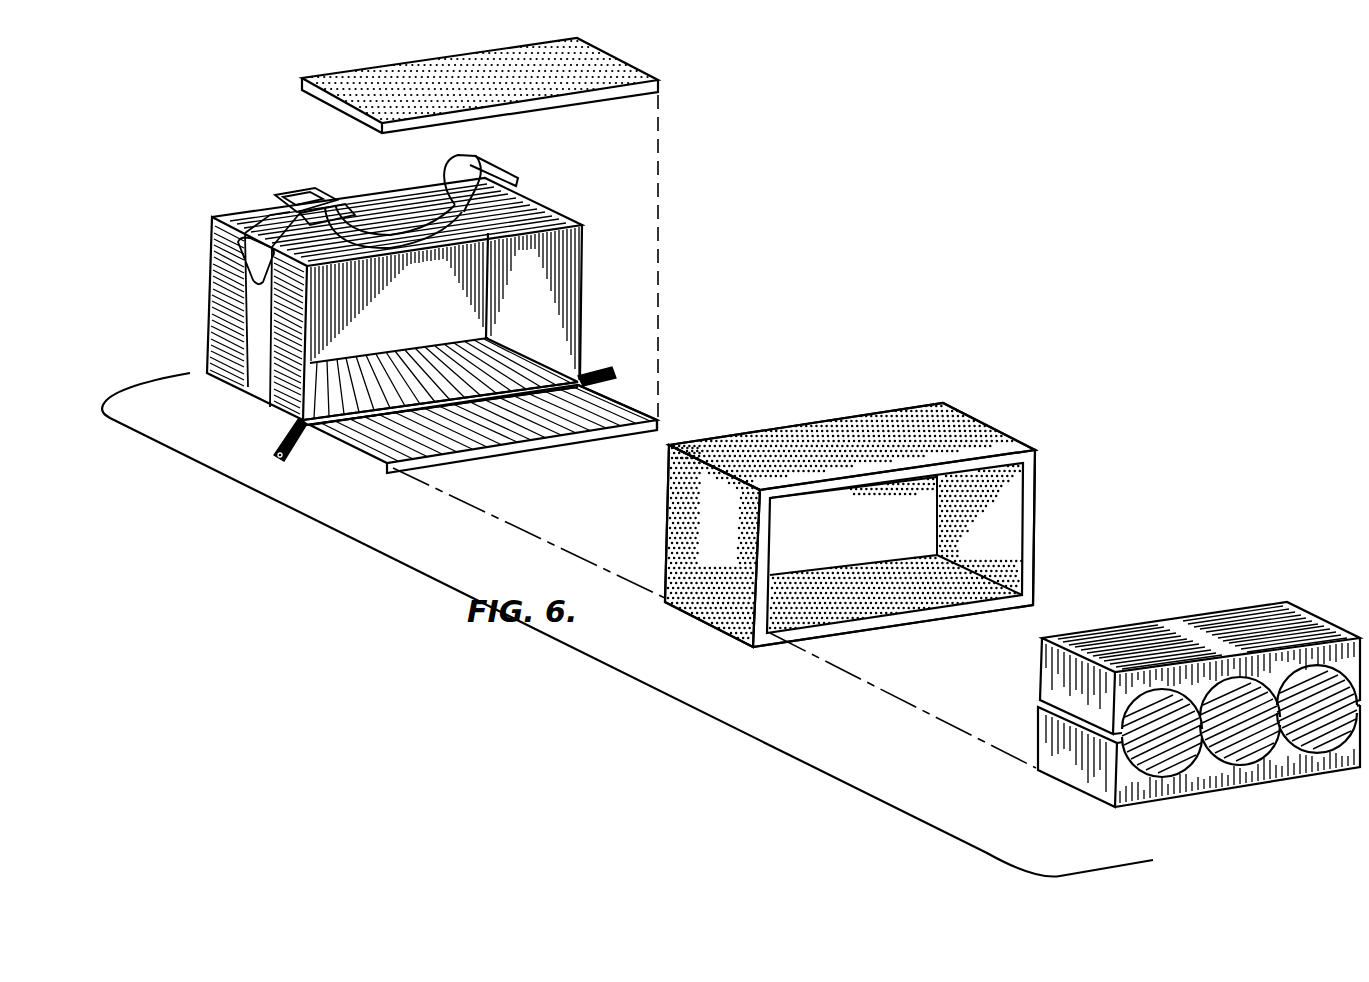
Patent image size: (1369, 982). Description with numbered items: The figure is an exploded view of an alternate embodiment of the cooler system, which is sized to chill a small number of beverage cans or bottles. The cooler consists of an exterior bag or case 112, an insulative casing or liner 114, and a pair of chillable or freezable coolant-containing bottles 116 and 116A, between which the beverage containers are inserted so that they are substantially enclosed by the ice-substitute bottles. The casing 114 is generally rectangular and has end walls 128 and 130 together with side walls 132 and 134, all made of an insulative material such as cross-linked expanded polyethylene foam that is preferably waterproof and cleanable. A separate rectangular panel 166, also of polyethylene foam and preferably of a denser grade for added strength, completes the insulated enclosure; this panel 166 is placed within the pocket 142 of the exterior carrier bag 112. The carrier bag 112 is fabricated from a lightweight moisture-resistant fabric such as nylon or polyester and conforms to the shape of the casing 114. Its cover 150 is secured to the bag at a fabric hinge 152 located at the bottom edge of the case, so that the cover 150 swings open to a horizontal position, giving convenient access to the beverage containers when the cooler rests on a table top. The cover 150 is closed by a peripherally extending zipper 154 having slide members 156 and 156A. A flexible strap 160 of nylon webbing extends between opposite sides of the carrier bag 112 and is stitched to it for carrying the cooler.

The exterior bag 112 is at (218, 315).
The insulative casing 114 is at (985, 423).
The chillable bottle 116 is at (1253, 615).
The chillable bottle 116A is at (1200, 775).
The end wall 128 is at (692, 490).
The end wall 130 is at (1030, 505).
The side wall 132 is at (853, 420).
The side wall 134 is at (867, 535).
The pocket 142 is at (527, 400).
The cover 150 is at (363, 463).
The fabric hinge 152 is at (553, 378).
The zipper 154 is at (627, 403).
The slide member 156 is at (282, 430).
The slide member 156A is at (617, 373).
The flexible strap 160 is at (445, 158).
The rectangular panel 166 is at (468, 60).